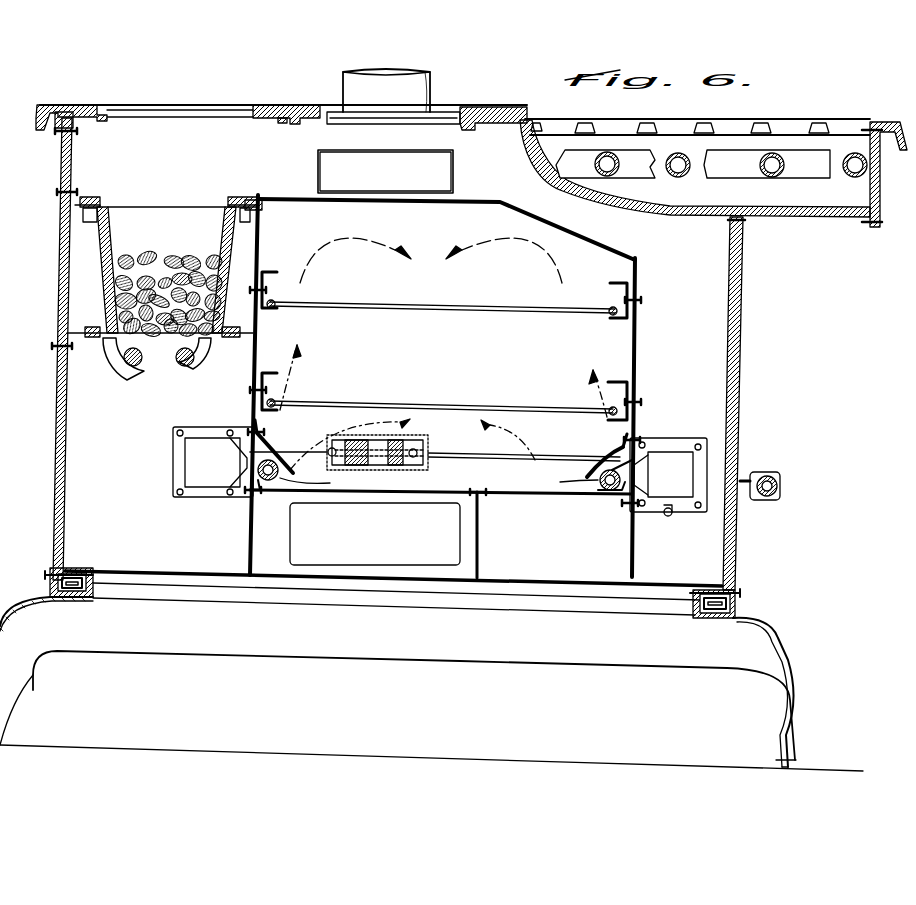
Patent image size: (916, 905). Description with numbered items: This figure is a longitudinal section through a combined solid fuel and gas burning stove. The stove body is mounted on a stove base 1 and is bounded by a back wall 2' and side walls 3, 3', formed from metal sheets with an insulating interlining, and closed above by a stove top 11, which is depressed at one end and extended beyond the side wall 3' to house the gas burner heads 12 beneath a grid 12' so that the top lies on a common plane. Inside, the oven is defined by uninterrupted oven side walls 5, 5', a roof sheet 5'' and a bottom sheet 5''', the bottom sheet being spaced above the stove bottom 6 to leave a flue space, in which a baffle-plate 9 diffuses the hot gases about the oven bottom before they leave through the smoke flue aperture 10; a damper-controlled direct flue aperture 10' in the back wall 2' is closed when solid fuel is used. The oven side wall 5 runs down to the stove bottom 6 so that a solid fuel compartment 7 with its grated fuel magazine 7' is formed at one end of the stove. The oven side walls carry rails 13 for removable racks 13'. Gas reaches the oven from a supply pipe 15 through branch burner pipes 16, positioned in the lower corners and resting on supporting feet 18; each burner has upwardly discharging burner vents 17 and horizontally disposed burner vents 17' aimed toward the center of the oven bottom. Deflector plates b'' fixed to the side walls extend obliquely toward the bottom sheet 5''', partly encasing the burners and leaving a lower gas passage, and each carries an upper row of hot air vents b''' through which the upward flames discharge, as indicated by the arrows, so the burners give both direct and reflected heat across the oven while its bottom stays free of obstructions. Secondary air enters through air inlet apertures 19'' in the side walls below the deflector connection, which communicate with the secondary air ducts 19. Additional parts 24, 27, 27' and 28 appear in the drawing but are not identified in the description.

The stove base 1 is at (540, 620).
The back wall 2' is at (376, 171).
The side wall 3 is at (46, 346).
The side wall 3' is at (751, 403).
The oven side wall 5 is at (173, 385).
The oven side wall 5' is at (647, 417).
The roof sheet 5'' is at (446, 218).
The bottom sheet 5''' is at (441, 513).
The stove bottom 6 is at (553, 569).
The solid fuel compartment 7 is at (157, 367).
The grated fuel magazine 7' is at (162, 272).
The baffle-plate 9 is at (484, 546).
The smoke flue aperture 10 is at (375, 534).
The direct flue aperture 10' is at (414, 171).
The stove top 11 is at (505, 110).
The gas burner heads 12 is at (695, 168).
The grid 12' is at (716, 161).
The rails 13 is at (444, 346).
The racks 13' is at (442, 357).
The supply pipe 15 is at (780, 488).
The branch burner pipe 16 is at (283, 462).
The upwardly discharging burner vents 17 is at (457, 440).
The horizontally disposed burner vents 17' is at (439, 482).
The supporting feet 18 is at (275, 492).
The secondary air duct 19 is at (440, 469).
The air inlet apertures 19'' is at (443, 484).
The screw 24 is at (670, 518).
The link block 27 is at (377, 440).
The connecting rod 27' is at (524, 439).
The slot 28 is at (346, 438).
The deflector plates b'' is at (440, 455).
The hot air vents b''' is at (441, 433).